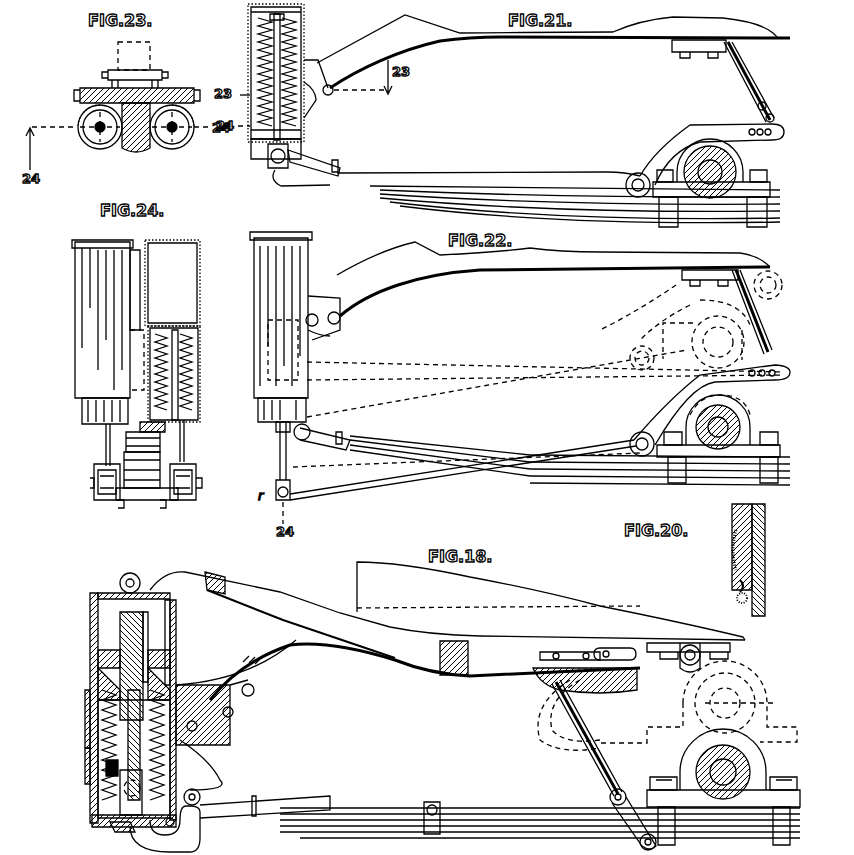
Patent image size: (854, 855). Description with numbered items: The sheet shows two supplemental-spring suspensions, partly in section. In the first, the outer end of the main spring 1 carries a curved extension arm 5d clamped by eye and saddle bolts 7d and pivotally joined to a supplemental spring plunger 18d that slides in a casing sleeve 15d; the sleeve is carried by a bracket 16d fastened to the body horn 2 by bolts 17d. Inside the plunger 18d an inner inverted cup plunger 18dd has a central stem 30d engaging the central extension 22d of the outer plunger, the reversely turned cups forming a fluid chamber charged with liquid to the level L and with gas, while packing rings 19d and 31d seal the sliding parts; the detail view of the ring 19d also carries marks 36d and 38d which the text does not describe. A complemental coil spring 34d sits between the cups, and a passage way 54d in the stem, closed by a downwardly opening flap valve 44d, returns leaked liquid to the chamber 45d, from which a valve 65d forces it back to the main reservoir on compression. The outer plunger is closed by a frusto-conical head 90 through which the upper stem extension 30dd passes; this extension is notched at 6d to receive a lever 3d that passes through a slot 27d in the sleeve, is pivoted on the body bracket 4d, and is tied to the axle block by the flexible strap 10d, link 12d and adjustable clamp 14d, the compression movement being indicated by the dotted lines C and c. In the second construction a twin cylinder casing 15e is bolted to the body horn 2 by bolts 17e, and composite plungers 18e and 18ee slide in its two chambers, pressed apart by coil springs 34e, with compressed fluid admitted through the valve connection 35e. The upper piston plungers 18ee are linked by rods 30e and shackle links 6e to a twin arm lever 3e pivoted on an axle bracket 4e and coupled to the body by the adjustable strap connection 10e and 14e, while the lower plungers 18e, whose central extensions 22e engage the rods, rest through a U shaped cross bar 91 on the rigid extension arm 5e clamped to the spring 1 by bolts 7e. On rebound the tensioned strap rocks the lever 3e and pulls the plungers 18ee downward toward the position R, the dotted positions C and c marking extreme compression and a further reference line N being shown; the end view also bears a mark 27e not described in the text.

In FIG. 24, the main spring 1 is at (146, 500).
In FIG. 21, the main spring 1 is at (466, 190).
In FIG. 22, the main spring 1 is at (418, 450).
In FIG. 18, the main spring 1 is at (486, 810).
In FIG. 23, the body horn 2 is at (118, 50).
In FIG. 24, the body horn 2 is at (138, 280).
In FIG. 21, the body horn 2 is at (452, 42).
In FIG. 22, the body horn 2 is at (386, 285).
In FIG. 18, the body horn 2 is at (268, 660).
In FIG. 24, the twin arm lever 3e is at (121, 508).
In FIG. 21, the twin arm lever 3e is at (518, 176).
In FIG. 22, the twin arm lever 3e is at (366, 486).
In FIG. 18, the lever 3d is at (265, 589).
In FIG. 21, the axle bracket 4e is at (636, 180).
In FIG. 22, the axle bracket 4e is at (638, 438).
In FIG. 18, the body bracket 4d is at (688, 672).
In FIG. 24, the rigid extension arm 5e is at (162, 448).
In FIG. 21, the rigid extension arm 5e is at (304, 172).
In FIG. 18, the curved extension arm 5d is at (206, 820).
In FIG. 24, the shackle links 6e is at (96, 486).
In FIG. 21, the shackle links 6e is at (278, 168).
In FIG. 22, the shackle links 6e is at (276, 482).
In FIG. 18, the notch 6d is at (120, 583).
In FIG. 21, the bolts 7e is at (340, 178).
In FIG. 22, the bolts 7e is at (345, 436).
In FIG. 18, the eye and saddle bolts 7d is at (202, 797).
In FIG. 21, the adjustable strap 10e is at (748, 80).
In FIG. 22, the adjustable strap 10e is at (736, 300).
In FIG. 18, the flexible strap 10d is at (598, 756).
In FIG. 18, the link 12d is at (608, 797).
In FIG. 21, the adjustable strap connection 14e is at (694, 52).
In FIG. 22, the adjustable strap connection 14e is at (712, 270).
In FIG. 18, the adjustable clamp 14d is at (546, 690).
In FIG. 23, the twin cylinder casing 15e is at (138, 148).
In FIG. 24, the twin cylinder casing 15e is at (100, 330).
In FIG. 22, the twin cylinder casing 15e is at (308, 264).
In FIG. 18, the casing sleeve 15d is at (90, 610).
In FIG. 18, the bracket 16d is at (87, 706).
In FIG. 23, the bolts 17e is at (108, 75).
In FIG. 21, the bolts 17e is at (329, 95).
In FIG. 22, the bolts 17e is at (334, 326).
In FIG. 18, the bolts 17d is at (250, 697).
In FIG. 23, the cup plunger 18e is at (82, 140).
In FIG. 24, the cup plunger 18e is at (84, 412).
In FIG. 21, the cup plunger 18e is at (251, 72).
In FIG. 22, the cup plunger 18e is at (282, 410).
In FIG. 24, the short piston plunger 18ee is at (185, 326).
In FIG. 21, the short piston plunger 18ee is at (304, 12).
In FIG. 20, the supplemental spring plunger 18d is at (758, 570).
In FIG. 18, the supplemental spring plunger 18d is at (104, 822).
In FIG. 20, the inner inverted cup plunger 18dd is at (752, 532).
In FIG. 18, the inner inverted cup plunger 18dd is at (104, 688).
In FIG. 20, the packing ring 19d is at (736, 580).
In FIG. 18, the packing ring 19d is at (104, 770).
In FIG. 23, the central extension 22e is at (172, 110).
In FIG. 24, the central extension 22e is at (200, 344).
In FIG. 21, the central extension 22e is at (305, 118).
In FIG. 18, the central extension 22d is at (110, 800).
In FIG. 24, the piston rod 27e is at (156, 372).
In FIG. 18, the slot 27d is at (172, 612).
In FIG. 23, the rods 30e is at (100, 132).
In FIG. 24, the rods 30e is at (106, 447).
In FIG. 21, the rods 30e is at (251, 46).
In FIG. 22, the rods 30e is at (290, 456).
In FIG. 18, the central stem 30d is at (110, 724).
In FIG. 18, the stem extension 30dd is at (148, 636).
In FIG. 18, the packing ring 31d is at (87, 782).
In FIG. 24, the complementary coil springs 34e is at (200, 366).
In FIG. 21, the complementary coil springs 34e is at (304, 42).
In FIG. 18, the complemental coil spring 34d is at (160, 688).
In FIG. 24, the valve connection 35e is at (150, 262).
In FIG. 20, the valve 36d is at (736, 600).
In FIG. 20, the passage 38d is at (738, 590).
In FIG. 18, the flap valve 44d is at (178, 776).
In FIG. 18, the chamber 45d is at (130, 820).
In FIG. 18, the passage way 54d is at (98, 660).
In FIG. 18, the valve 65d is at (172, 840).
In FIG. 18, the frusto-conical head 90 is at (171, 650).
In FIG. 24, the U shaped cross bar 91 is at (186, 425).
In FIG. 21, the U shaped cross bar 91 is at (270, 160).
In FIG. 22, the compression position line C is at (310, 343).
In FIG. 18, the compression position line C is at (760, 703).
In FIG. 21, the line N is at (305, 150).
In FIG. 22, the line N is at (735, 398).
In FIG. 22, the rebound position line R is at (725, 425).
In FIG. 18, the liquid level L is at (100, 745).
In FIG. 18, the compression position line c is at (800, 752).